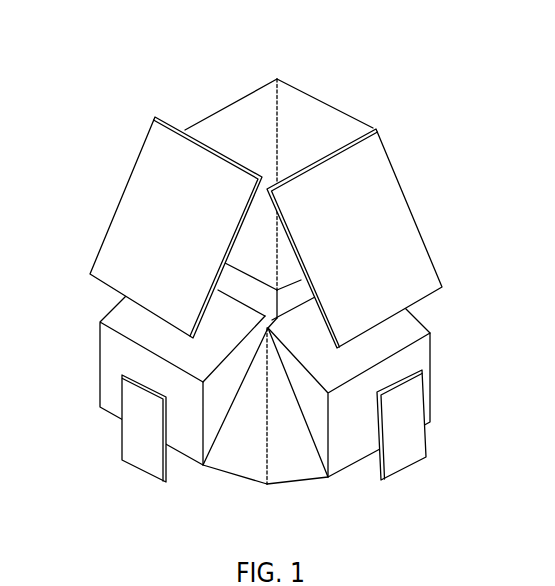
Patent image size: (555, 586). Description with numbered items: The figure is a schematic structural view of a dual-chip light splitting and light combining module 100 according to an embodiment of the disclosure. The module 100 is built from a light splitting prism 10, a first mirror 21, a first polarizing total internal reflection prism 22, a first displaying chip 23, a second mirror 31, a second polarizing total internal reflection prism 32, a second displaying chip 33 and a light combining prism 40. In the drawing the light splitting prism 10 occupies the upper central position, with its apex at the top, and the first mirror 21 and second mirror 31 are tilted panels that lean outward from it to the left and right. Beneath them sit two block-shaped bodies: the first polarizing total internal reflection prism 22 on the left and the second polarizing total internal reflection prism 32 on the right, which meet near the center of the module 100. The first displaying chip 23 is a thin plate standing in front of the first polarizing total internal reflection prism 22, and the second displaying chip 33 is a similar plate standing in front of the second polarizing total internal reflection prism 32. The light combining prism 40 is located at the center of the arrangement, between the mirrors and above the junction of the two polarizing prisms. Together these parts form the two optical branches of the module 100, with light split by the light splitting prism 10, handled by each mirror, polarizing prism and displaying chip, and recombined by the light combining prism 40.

The dual-chip light splitting and light combining module 100 is at (267, 258).
The light splitting prism 10 is at (318, 120).
The first mirror 21 is at (127, 243).
The first polarizing total internal reflection prism 22 is at (110, 362).
The first displaying chip 23 is at (132, 437).
The second mirror 31 is at (376, 195).
The second polarizing total internal reflection prism 32 is at (412, 330).
The second displaying chip 33 is at (407, 438).
The light combining prism 40 is at (240, 282).